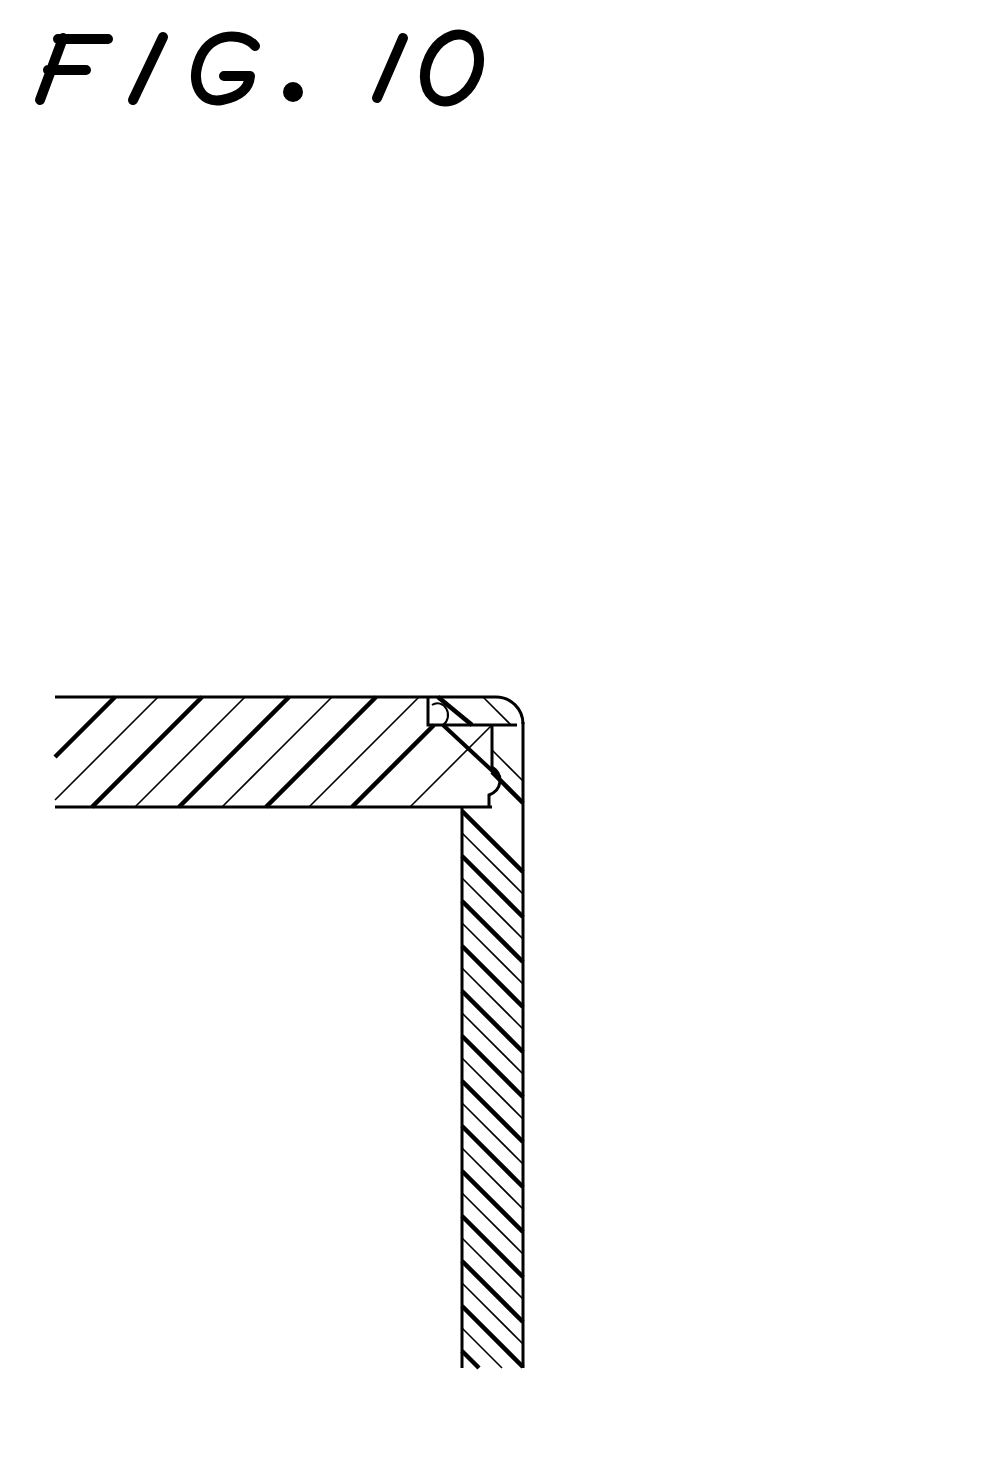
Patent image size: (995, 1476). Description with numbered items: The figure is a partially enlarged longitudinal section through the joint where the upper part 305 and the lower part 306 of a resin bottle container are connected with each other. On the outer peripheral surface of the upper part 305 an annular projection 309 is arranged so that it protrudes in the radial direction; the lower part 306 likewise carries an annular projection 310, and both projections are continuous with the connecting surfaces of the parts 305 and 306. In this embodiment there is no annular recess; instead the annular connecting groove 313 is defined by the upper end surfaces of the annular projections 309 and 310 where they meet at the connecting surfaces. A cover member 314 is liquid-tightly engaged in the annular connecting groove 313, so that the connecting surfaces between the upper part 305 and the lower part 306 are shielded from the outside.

The upper part 305 is at (205, 695).
The lower part 306 is at (523, 1151).
The annular projection 309 is at (495, 700).
The annular projection 310 is at (500, 750).
The annular connecting groove 313 is at (447, 727).
The cover member 314 is at (460, 710).